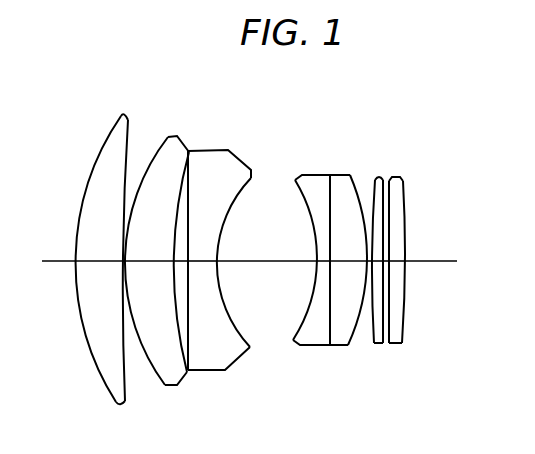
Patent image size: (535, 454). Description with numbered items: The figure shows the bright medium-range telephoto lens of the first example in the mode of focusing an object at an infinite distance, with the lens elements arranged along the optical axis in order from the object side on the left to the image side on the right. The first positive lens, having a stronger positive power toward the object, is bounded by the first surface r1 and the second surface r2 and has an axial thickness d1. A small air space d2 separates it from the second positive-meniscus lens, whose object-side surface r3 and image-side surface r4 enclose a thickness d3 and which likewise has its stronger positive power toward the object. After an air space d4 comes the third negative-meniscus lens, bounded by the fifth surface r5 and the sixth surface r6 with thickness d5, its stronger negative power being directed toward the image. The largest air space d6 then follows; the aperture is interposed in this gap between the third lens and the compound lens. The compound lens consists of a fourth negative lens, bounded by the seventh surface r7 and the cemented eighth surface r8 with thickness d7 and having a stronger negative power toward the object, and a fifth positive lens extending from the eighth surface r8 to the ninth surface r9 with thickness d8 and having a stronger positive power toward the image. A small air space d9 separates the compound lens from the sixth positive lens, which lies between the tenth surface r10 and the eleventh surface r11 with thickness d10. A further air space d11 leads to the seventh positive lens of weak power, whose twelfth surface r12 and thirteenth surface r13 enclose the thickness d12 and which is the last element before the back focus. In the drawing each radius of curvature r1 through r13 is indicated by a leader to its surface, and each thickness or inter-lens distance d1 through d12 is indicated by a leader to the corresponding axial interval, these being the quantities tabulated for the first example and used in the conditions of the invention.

The radius of curvature of the first surface r1 is at (109, 132).
The radius of curvature of the second surface r2 is at (130, 128).
The radius of curvature of the third surface r3 is at (163, 136).
The radius of curvature of the fourth surface r4 is at (187, 146).
The radius of curvature of the fifth surface r5 is at (192, 160).
The radius of curvature of the sixth surface r6 is at (253, 173).
The radius of curvature of the seventh surface r7 is at (294, 181).
The radius of curvature of the eighth surface r8 is at (329, 175).
The radius of curvature of the ninth surface r9 is at (350, 175).
The radius of curvature of the tenth surface r10 is at (375, 178).
The radius of curvature of the eleventh surface r11 is at (384, 179).
The radius of curvature of the twelfth surface r12 is at (391, 177).
The radius of curvature of the thirteenth surface r13 is at (403, 195).
The thickness of the first lens d1 is at (92, 262).
The inter-lens distance between the first and second lenses d2 is at (122, 263).
The thickness of the second lens d3 is at (147, 263).
The inter-lens distance between the second and third lenses d4 is at (174, 265).
The thickness of the third lens d5 is at (200, 266).
The inter-lens distance between the third lens and the compound lens d6 is at (270, 262).
The thickness of the fourth lens d7 is at (318, 263).
The thickness of the fifth lens d8 is at (343, 263).
The inter-lens distance between the fifth and sixth lenses d9 is at (358, 263).
The thickness of the sixth lens d10 is at (377, 263).
The inter-lens distance between the sixth and seventh lenses d11 is at (388, 265).
The thickness of the seventh lens d12 is at (397, 263).